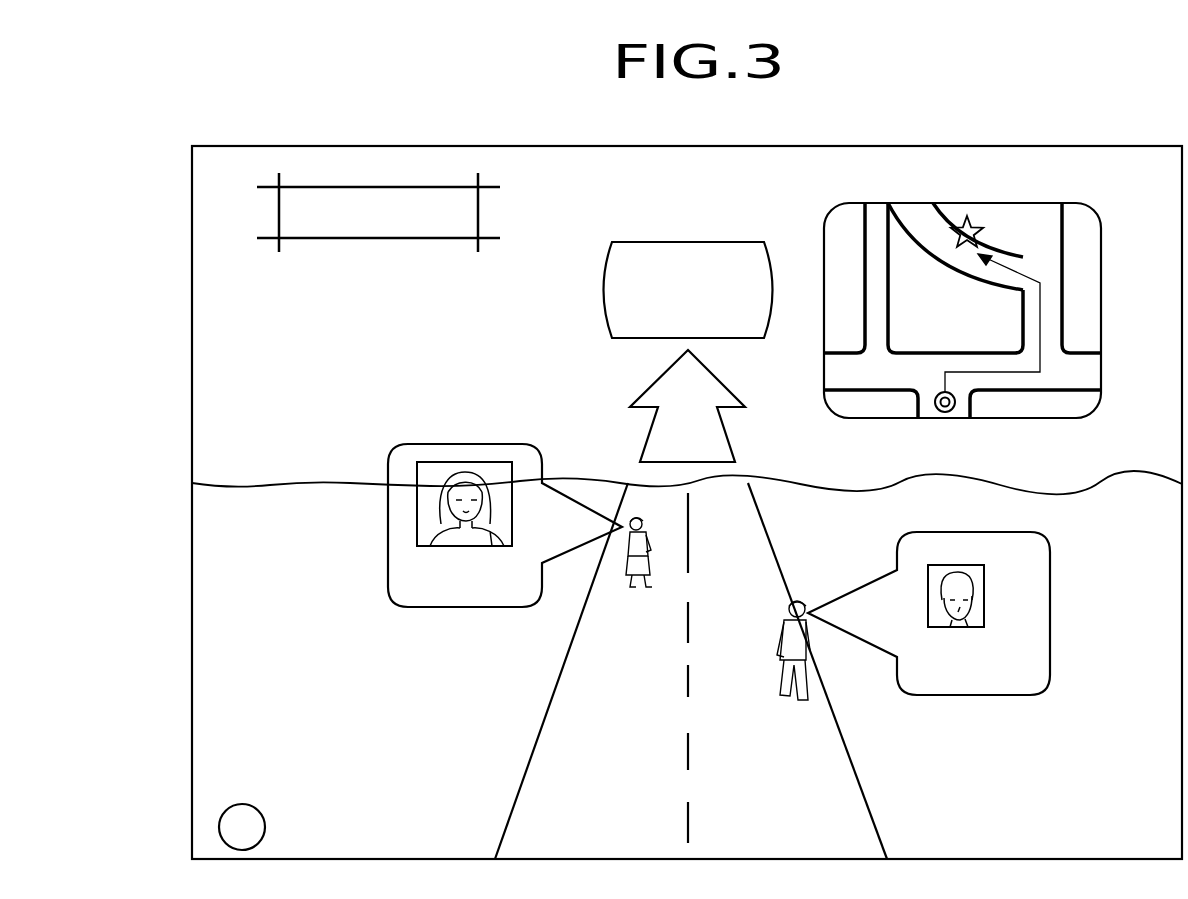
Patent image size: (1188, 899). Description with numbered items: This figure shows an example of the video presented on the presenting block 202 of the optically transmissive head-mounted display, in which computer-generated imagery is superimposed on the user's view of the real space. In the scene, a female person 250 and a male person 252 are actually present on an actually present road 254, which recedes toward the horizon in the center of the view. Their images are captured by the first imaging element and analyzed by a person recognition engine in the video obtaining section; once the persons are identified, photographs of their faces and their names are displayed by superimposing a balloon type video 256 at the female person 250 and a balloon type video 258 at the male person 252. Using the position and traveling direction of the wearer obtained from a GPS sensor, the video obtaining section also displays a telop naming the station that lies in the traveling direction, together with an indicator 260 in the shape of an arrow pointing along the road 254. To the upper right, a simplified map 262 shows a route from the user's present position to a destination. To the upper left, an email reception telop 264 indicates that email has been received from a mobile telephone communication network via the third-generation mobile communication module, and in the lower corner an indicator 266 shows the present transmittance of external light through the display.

The presenting block 202 is at (688, 146).
The female person 250 is at (637, 592).
The male person 252 is at (795, 713).
The road 254 is at (547, 708).
The balloon type video 256 is at (468, 444).
The balloon type video 258 is at (973, 532).
The indicator 260 is at (650, 382).
The simplified map 262 is at (975, 188).
The email reception telop 264 is at (380, 240).
The indicator 266 is at (243, 804).